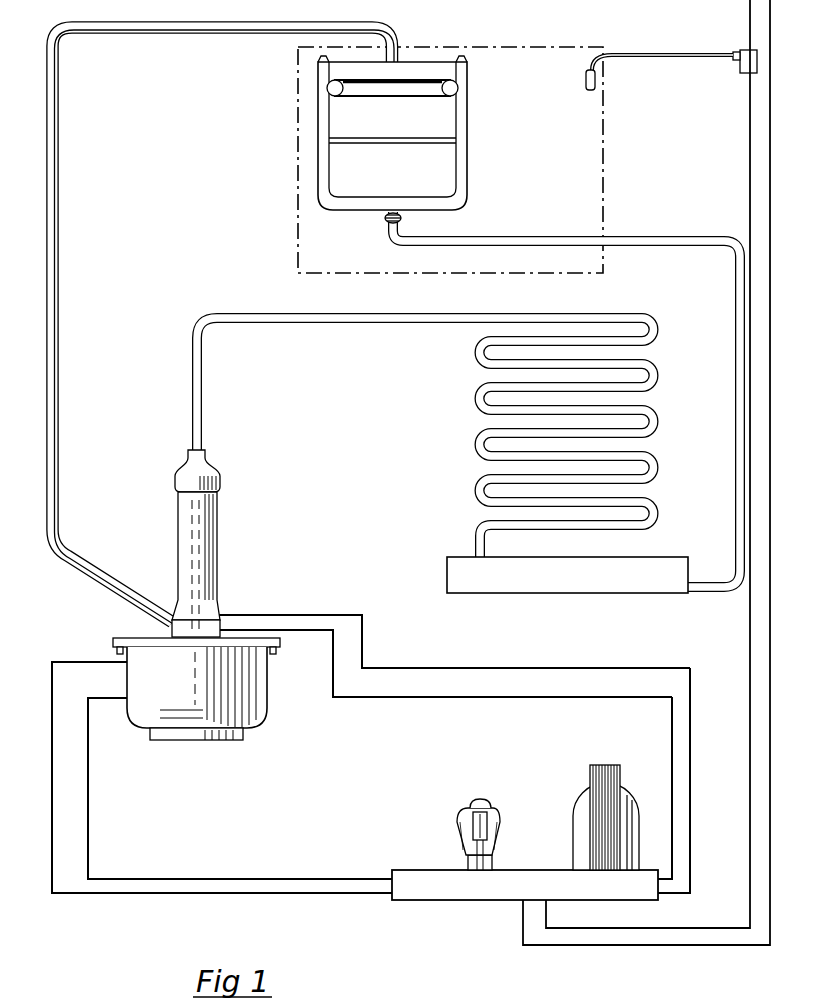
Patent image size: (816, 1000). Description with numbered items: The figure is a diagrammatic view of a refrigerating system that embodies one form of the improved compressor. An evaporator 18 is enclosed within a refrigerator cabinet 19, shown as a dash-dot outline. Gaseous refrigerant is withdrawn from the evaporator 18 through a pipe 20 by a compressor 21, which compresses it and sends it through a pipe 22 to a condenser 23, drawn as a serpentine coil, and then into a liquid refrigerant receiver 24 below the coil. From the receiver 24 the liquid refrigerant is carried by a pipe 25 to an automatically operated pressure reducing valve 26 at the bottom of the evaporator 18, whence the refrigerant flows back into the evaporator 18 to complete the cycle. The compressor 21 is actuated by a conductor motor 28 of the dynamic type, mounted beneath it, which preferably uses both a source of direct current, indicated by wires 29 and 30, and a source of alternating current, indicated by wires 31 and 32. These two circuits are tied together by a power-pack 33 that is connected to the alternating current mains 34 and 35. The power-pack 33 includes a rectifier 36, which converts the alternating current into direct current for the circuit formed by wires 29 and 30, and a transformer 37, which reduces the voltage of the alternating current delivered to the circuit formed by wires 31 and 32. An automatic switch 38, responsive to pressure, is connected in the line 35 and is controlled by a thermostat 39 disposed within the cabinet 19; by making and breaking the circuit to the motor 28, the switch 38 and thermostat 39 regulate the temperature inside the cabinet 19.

The evaporator 18 is at (467, 178).
The refrigerator cabinet 19 is at (603, 99).
The pipe 20 is at (58, 231).
The compressor 21 is at (215, 578).
The pipe 22 is at (326, 326).
The condenser 23 is at (658, 380).
The liquid refrigerant receiver 24 is at (668, 563).
The pipe 25 is at (735, 292).
The pressure reducing valve 26 is at (384, 224).
The conductor motor 28 is at (257, 720).
The wire 29 is at (52, 835).
The wire 30 is at (88, 834).
The wire 31 is at (490, 669).
The wire 32 is at (488, 699).
The power-pack 33 is at (508, 870).
The alternating current main 34 is at (522, 922).
The alternating current main 35 is at (546, 930).
The rectifier 36 is at (494, 804).
The transformer 37 is at (620, 780).
The automatic switch 38 is at (738, 72).
The thermostat 39 is at (586, 80).